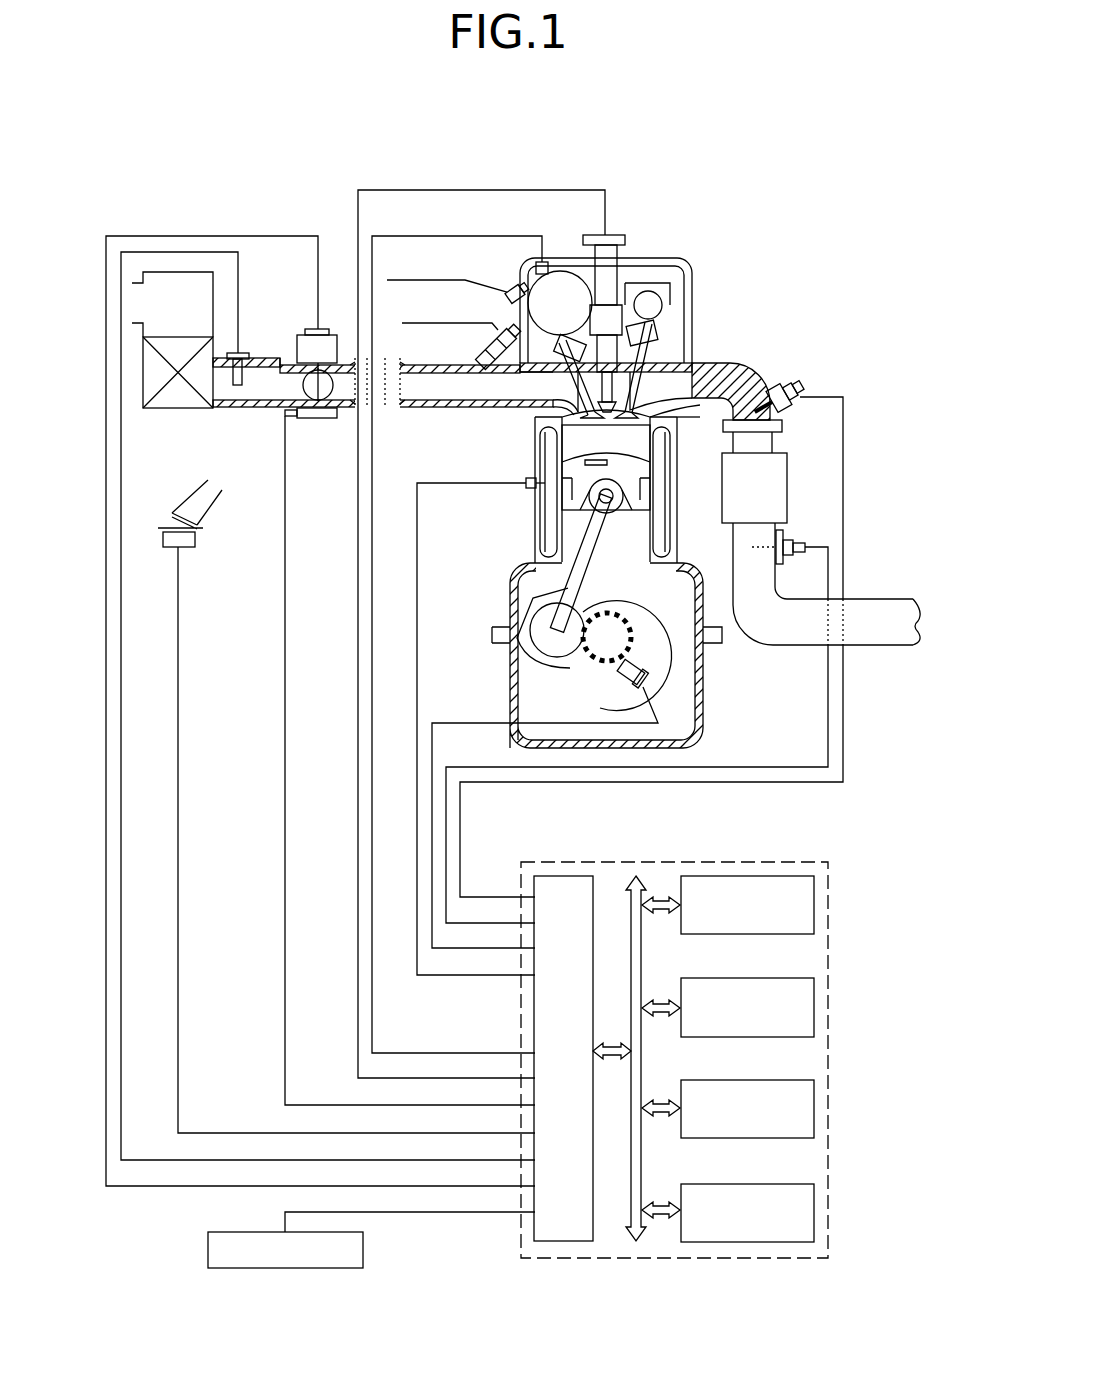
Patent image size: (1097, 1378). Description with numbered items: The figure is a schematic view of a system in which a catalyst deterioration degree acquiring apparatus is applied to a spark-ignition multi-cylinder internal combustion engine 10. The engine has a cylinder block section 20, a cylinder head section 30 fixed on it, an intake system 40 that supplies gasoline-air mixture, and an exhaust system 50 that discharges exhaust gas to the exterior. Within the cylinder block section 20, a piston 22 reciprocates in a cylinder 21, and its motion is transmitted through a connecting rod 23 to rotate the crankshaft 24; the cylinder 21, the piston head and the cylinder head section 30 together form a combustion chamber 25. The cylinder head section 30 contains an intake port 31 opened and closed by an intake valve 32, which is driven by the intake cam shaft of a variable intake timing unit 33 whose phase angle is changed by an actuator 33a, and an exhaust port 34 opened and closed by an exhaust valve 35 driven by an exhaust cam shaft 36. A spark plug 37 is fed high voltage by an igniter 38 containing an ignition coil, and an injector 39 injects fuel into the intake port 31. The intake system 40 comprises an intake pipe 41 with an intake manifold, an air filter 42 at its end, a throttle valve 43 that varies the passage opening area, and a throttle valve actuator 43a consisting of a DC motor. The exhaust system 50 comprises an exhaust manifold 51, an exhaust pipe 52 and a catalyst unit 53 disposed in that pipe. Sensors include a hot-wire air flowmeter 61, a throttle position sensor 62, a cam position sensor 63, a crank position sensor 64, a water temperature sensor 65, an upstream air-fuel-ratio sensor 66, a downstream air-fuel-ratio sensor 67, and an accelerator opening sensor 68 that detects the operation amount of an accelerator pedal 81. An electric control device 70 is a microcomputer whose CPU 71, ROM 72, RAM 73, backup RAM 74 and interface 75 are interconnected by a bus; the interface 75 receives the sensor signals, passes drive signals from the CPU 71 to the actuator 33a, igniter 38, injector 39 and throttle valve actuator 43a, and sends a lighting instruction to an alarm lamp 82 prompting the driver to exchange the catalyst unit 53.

The internal combustion engine 10 is at (713, 194).
The cylinder block section 20 is at (530, 557).
The cylinder 21 is at (562, 456).
The piston 22 is at (562, 500).
The connecting rod 23 is at (614, 548).
The crankshaft 24 is at (612, 632).
The combustion chamber 25 is at (593, 457).
The cylinder head section 30 is at (708, 264).
The intake port 31 is at (568, 392).
The intake valve 32 is at (542, 440).
The variable intake timing unit 33 is at (564, 298).
The actuator 33a is at (517, 290).
The exhaust port 34 is at (650, 396).
The exhaust valve 35 is at (670, 425).
The exhaust cam shaft 36 is at (650, 298).
The spark plug 37 is at (612, 392).
The igniter 38 is at (606, 252).
The injector 39 is at (508, 357).
The intake system 40 is at (320, 212).
The intake pipe 41 is at (474, 408).
The air filter 42 is at (163, 408).
The throttle valve 43 is at (300, 394).
The throttle valve actuator 43a is at (306, 334).
The exhaust system 50 is at (788, 328).
The exhaust manifold 51 is at (752, 368).
The exhaust pipe 52 is at (750, 637).
The catalyst unit 53 is at (788, 472).
The hot-wire air flowmeter 61 is at (238, 352).
The throttle position sensor 62 is at (318, 418).
The cam position sensor 63 is at (548, 262).
The crank position sensor 64 is at (646, 678).
The water temperature sensor 65 is at (528, 488).
The upstream air-fuel-ratio sensor 66 is at (791, 393).
The downstream air-fuel-ratio sensor 67 is at (792, 541).
The accelerator opening sensor 68 is at (178, 549).
The electric control device 70 is at (697, 1258).
The CPU 71 is at (813, 905).
The ROM 72 is at (813, 1008).
The RAM 73 is at (813, 1108).
The backup RAM 74 is at (813, 1210).
The interface 75 is at (565, 1242).
The accelerator pedal 81 is at (170, 521).
The alarm lamp 82 is at (364, 1252).